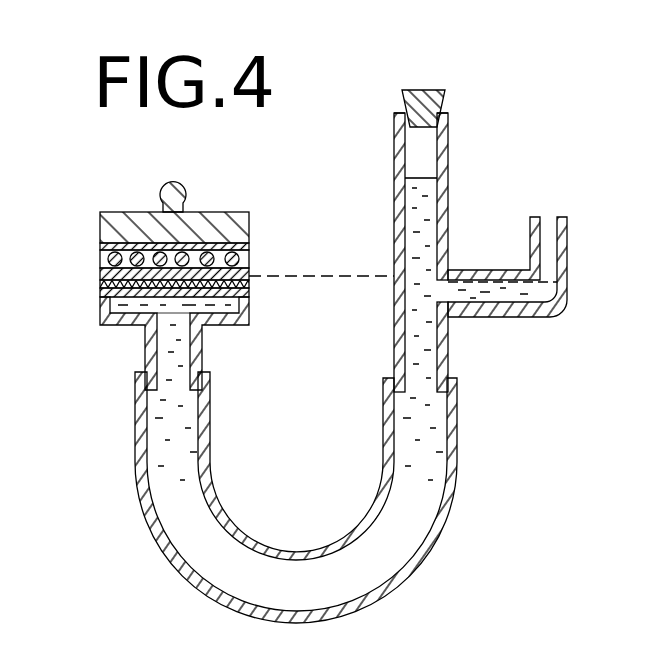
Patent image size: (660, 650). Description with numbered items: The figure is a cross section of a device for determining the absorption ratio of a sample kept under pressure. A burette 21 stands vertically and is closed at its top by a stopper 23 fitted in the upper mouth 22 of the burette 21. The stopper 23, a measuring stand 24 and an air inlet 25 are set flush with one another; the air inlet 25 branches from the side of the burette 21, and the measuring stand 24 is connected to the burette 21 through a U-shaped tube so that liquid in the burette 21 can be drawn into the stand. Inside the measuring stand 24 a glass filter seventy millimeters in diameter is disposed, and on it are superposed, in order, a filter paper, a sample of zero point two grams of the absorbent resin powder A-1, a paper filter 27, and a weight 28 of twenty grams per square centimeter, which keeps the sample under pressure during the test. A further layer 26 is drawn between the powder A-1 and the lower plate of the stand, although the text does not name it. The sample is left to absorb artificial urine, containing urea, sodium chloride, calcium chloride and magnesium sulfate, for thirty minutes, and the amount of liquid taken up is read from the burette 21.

The burette 21 is at (394, 240).
The upper mouth 22 is at (455, 101).
The stopper 23 is at (405, 100).
The measuring stand 24 is at (100, 296).
The air inlet 25 is at (548, 243).
The filter layer 26 is at (100, 283).
The paper filter 27 is at (100, 245).
The weight 28 is at (249, 228).
The absorbent resin powder A-1 is at (100, 258).